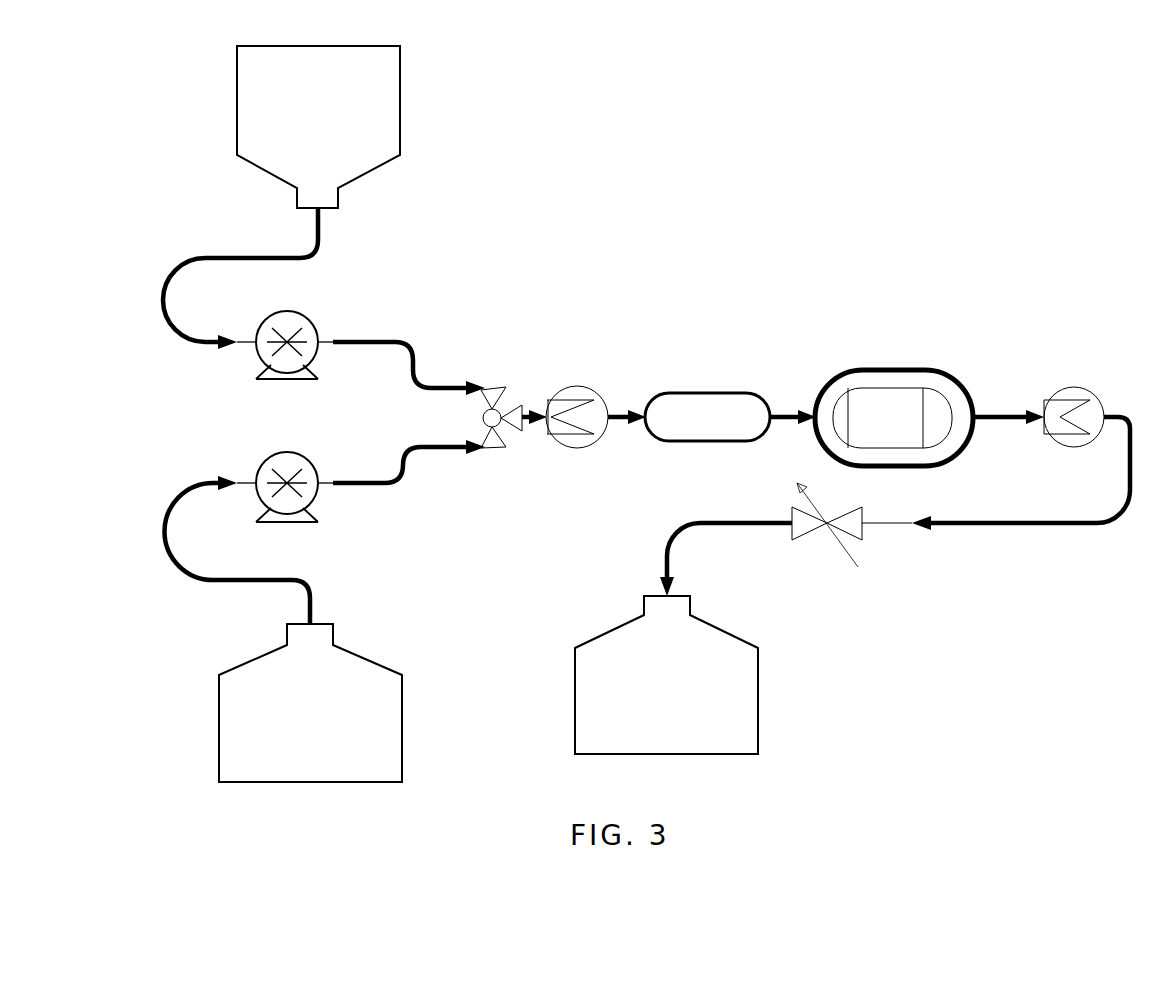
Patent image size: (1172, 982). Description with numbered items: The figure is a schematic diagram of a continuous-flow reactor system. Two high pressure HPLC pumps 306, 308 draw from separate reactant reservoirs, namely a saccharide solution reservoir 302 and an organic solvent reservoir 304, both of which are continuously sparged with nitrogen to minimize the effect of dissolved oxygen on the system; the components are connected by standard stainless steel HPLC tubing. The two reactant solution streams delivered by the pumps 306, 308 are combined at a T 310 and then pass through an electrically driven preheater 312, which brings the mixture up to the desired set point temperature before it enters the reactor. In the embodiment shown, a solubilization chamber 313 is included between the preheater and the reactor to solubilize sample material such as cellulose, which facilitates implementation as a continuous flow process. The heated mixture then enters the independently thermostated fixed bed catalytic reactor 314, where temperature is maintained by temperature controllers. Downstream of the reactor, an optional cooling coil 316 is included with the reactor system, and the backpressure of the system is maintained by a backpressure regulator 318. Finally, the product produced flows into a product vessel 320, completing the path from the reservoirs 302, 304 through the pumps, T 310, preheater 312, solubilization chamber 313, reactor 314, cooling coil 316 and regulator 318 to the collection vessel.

The saccharide solution reservoir 302 is at (237, 92).
The organic solvent reservoir 304 is at (219, 702).
The high pressure pump 306 is at (304, 316).
The high pressure pump 308 is at (312, 507).
The T 310 is at (490, 450).
The preheater 312 is at (577, 450).
The solubilization chamber 313 is at (707, 393).
The fixed bed catalytic reactor 314 is at (943, 372).
The cooling coil 316 is at (1058, 447).
The backpressure regulator 318 is at (797, 538).
The product vessel 320 is at (599, 638).